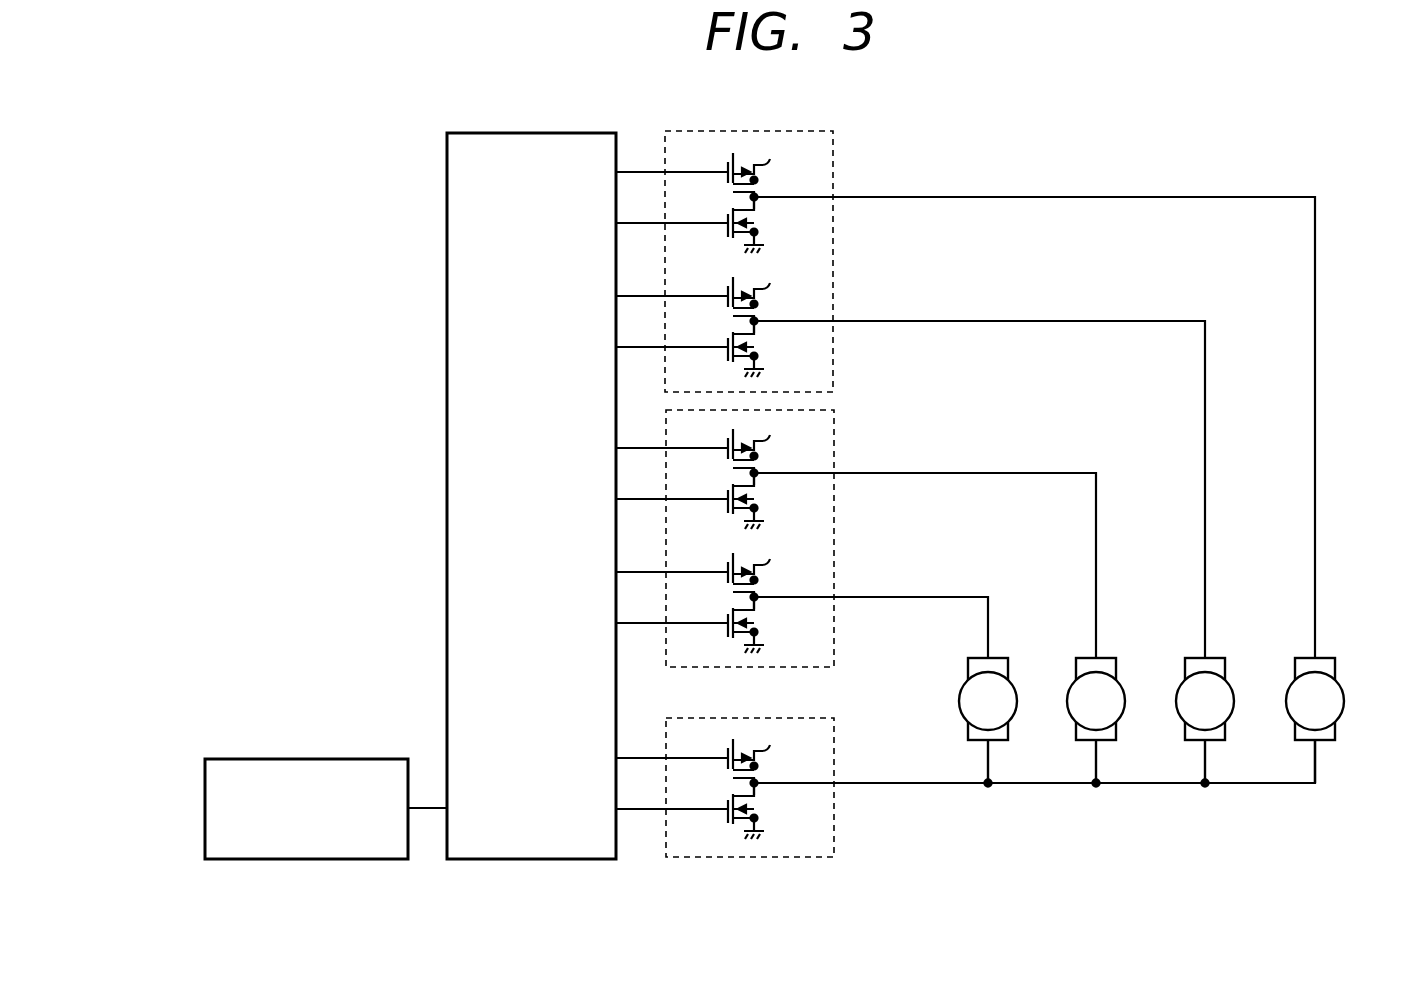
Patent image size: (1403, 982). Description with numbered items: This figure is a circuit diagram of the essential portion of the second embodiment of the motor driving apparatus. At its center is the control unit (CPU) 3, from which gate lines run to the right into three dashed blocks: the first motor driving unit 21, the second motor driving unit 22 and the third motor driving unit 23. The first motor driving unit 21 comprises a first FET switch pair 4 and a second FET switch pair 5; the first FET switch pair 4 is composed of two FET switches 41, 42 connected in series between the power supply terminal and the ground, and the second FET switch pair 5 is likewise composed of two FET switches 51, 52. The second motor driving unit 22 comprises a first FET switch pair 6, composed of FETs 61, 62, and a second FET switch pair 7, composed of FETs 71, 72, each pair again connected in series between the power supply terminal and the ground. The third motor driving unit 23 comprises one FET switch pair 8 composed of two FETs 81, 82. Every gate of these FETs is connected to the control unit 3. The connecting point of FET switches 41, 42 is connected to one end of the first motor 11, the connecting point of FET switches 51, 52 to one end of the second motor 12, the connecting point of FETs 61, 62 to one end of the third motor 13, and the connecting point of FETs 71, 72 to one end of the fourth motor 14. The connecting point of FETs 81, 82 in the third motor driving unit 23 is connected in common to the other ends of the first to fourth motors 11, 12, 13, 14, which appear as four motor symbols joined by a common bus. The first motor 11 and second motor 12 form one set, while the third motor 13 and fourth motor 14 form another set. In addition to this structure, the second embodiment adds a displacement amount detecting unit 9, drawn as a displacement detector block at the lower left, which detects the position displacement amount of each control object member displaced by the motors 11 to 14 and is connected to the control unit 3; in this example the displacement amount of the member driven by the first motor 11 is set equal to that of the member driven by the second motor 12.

The control unit (CPU) 3 is at (447, 172).
The first FET switch pair 4 is at (965, 405).
The FET switch 41 is at (760, 172).
The FET switch 42 is at (760, 225).
The second FET switch pair 5 is at (910, 467).
The FET switch 51 is at (760, 296).
The FET switch 52 is at (760, 349).
The first FET switch pair 6 is at (856, 543).
The FET 61 is at (760, 448).
The FET 62 is at (760, 501).
The second FET switch pair 7 is at (802, 605).
The FET 71 is at (760, 572).
The FET 72 is at (760, 625).
The FET switch pair 8 is at (965, 789).
The FET 81 is at (760, 758).
The FET 82 is at (760, 811).
The displacement amount detecting unit 9 is at (358, 759).
The first motor 11 is at (1340, 688).
The second motor 12 is at (1230, 688).
The third motor 13 is at (1121, 688).
The fourth motor 14 is at (1013, 688).
The first motor driving unit 21 is at (834, 165).
The second motor driving unit 22 is at (834, 442).
The third motor driving unit 23 is at (835, 828).